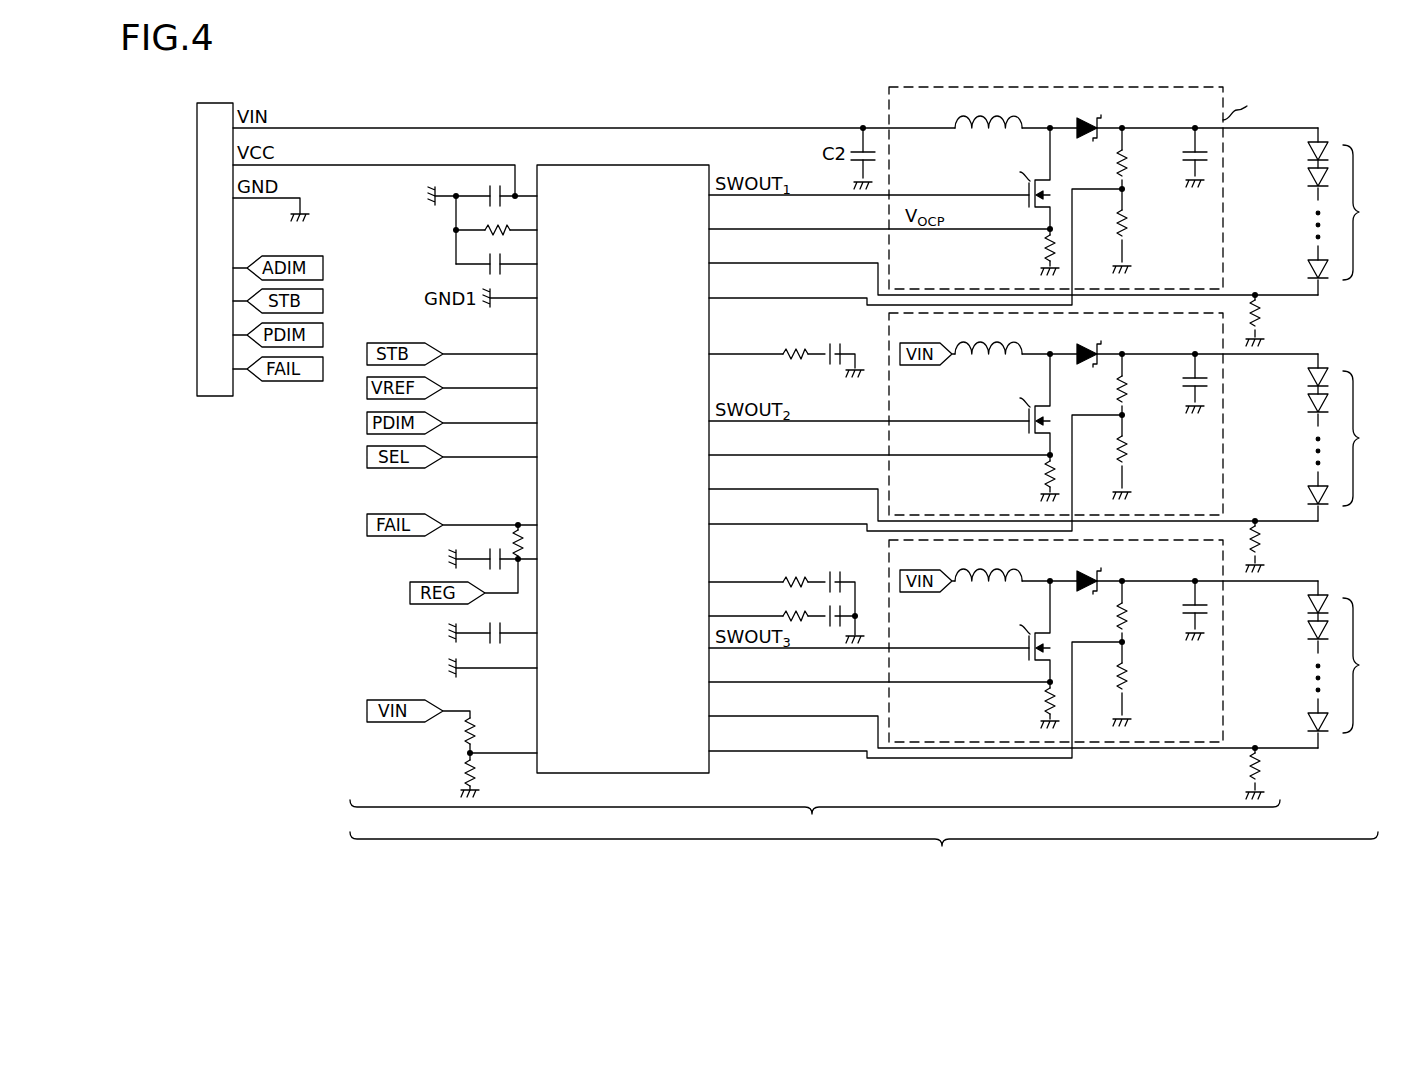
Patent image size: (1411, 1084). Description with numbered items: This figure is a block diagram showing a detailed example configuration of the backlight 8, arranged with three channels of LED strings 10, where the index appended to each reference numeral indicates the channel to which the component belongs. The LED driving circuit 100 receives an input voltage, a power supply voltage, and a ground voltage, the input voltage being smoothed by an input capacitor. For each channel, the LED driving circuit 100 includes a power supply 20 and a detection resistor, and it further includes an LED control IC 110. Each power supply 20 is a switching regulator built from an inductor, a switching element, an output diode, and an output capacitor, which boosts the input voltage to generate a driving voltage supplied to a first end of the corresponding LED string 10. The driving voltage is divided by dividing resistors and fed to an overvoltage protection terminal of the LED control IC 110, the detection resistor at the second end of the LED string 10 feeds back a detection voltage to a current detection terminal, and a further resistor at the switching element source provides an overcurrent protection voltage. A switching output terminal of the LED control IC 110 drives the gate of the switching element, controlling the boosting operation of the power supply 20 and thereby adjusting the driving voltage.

The LED control IC 110 is at (598, 165).
The LED driving circuit 100 is at (815, 819).
The backlight 8 is at (864, 852).
The LED string 10 is at (1352, 438).
The power supply 20 is at (1239, 643).